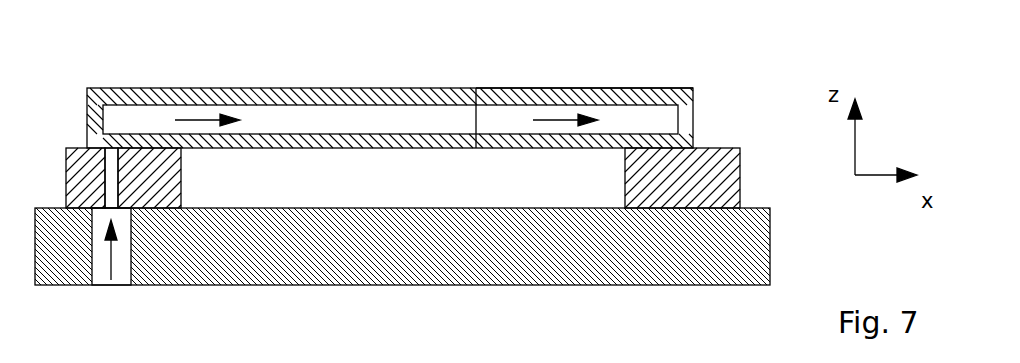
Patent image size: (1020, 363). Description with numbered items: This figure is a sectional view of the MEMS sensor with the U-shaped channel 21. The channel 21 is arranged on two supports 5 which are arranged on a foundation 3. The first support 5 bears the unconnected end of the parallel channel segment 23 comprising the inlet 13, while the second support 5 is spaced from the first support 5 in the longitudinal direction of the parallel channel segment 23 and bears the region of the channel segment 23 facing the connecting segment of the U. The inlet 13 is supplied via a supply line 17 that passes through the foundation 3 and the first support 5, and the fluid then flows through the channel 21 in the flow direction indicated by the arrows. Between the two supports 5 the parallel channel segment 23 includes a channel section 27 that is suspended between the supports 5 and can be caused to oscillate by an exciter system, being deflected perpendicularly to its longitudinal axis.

The foundation 3 is at (218, 263).
The support 5 is at (77, 167).
The inlet 13 is at (112, 147).
The supply line 17 is at (108, 212).
The U-shaped channel 21 is at (394, 84).
The parallel channel segment 23 is at (625, 98).
The channel section 27 is at (407, 98).